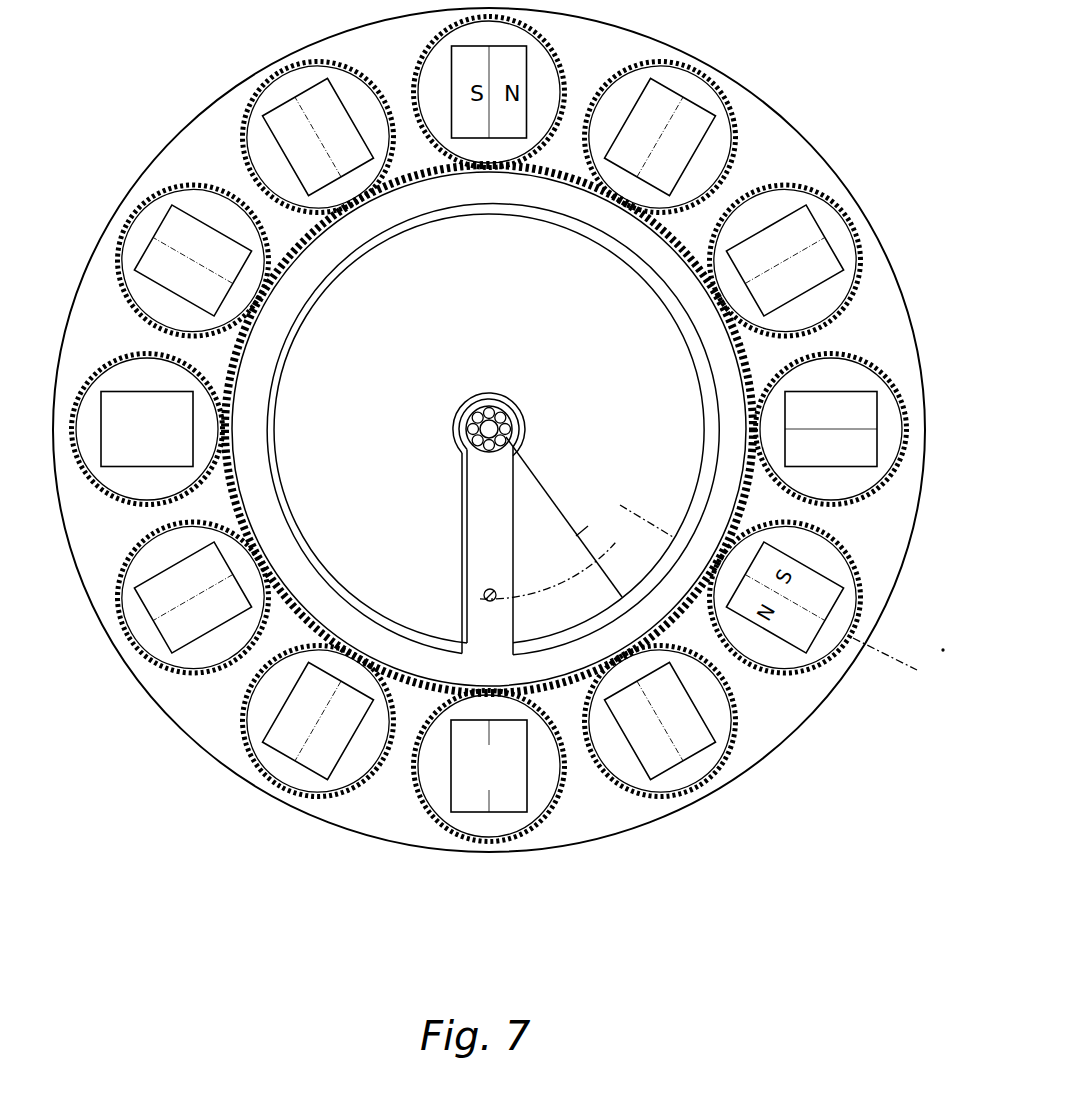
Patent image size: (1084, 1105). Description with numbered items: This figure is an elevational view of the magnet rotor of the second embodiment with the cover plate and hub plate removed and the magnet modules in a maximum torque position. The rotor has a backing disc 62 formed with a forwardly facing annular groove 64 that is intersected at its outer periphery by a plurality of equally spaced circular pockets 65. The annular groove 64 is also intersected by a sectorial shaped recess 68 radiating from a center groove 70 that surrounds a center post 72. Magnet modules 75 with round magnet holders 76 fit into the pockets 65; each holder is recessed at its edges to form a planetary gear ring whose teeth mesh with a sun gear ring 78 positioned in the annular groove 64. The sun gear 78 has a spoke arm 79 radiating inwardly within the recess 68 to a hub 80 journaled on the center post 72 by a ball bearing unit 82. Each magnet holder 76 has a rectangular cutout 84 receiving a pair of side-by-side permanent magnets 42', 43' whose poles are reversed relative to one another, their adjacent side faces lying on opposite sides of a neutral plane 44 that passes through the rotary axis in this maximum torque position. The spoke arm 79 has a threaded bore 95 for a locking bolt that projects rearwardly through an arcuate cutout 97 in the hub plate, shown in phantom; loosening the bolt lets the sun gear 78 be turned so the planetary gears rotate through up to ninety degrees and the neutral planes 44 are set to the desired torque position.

The backing disc 62 is at (514, 297).
The annular groove 64 is at (304, 316).
The circular pockets 65 is at (548, 812).
The sectorial shaped recess 68 is at (582, 528).
The center groove 70 is at (525, 405).
The center post 72 is at (480, 420).
The magnet modules 75 is at (236, 760).
The magnet holders 76 is at (485, 825).
The sun gear ring 78 is at (340, 240).
The spoke arm 79 is at (505, 488).
The hub 80 is at (500, 398).
The ball bearing unit 82 is at (506, 433).
The rectangular cutout 84 is at (455, 792).
The threaded bore 95 is at (486, 591).
The arcuate cutout 97 is at (527, 578).
The neutral plane 44 is at (641, 527).
The permanent magnet 42' is at (473, 750).
The permanent magnet 43' is at (508, 784).